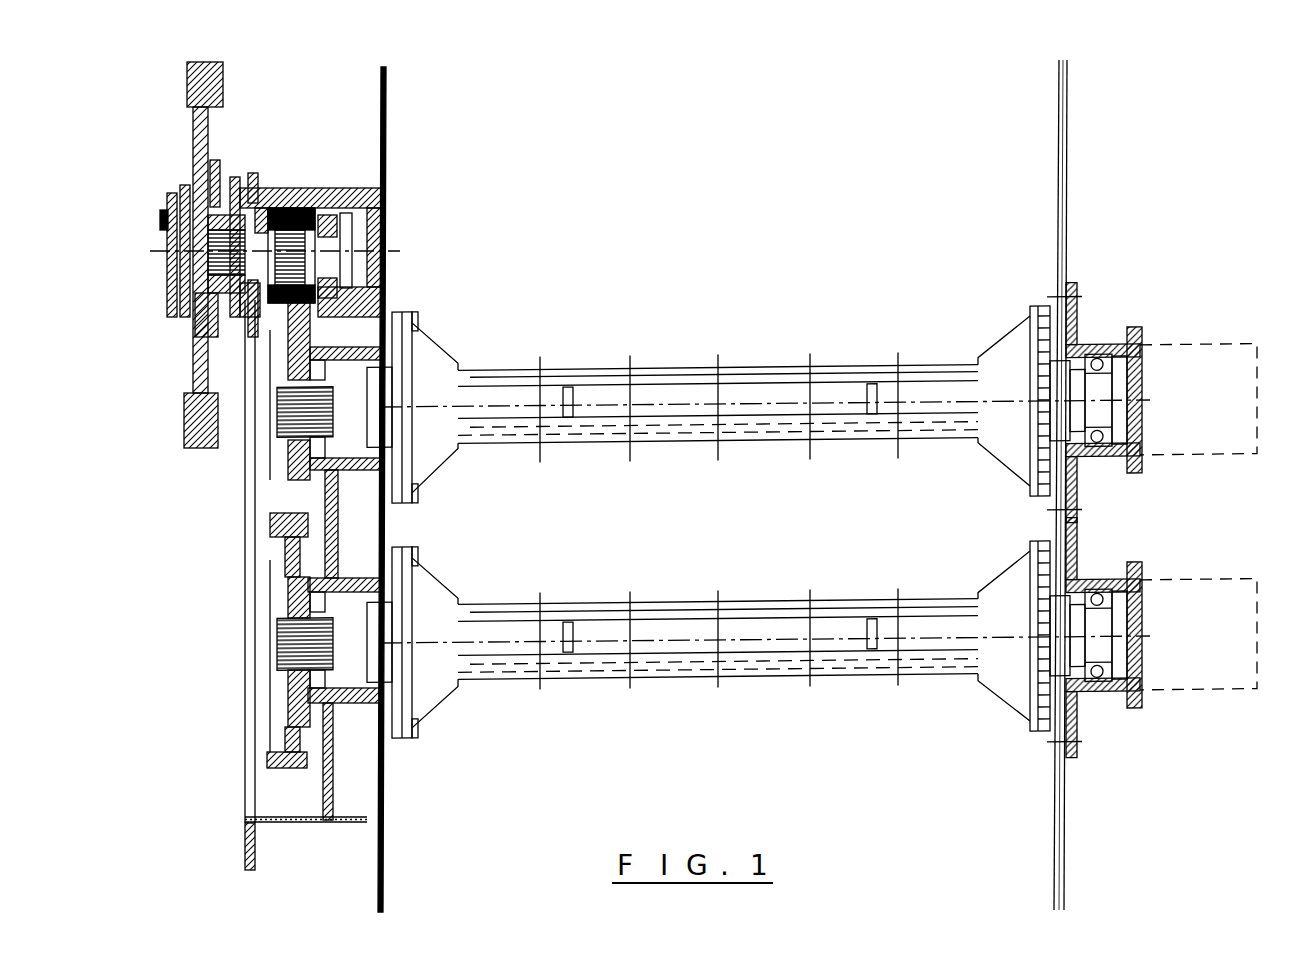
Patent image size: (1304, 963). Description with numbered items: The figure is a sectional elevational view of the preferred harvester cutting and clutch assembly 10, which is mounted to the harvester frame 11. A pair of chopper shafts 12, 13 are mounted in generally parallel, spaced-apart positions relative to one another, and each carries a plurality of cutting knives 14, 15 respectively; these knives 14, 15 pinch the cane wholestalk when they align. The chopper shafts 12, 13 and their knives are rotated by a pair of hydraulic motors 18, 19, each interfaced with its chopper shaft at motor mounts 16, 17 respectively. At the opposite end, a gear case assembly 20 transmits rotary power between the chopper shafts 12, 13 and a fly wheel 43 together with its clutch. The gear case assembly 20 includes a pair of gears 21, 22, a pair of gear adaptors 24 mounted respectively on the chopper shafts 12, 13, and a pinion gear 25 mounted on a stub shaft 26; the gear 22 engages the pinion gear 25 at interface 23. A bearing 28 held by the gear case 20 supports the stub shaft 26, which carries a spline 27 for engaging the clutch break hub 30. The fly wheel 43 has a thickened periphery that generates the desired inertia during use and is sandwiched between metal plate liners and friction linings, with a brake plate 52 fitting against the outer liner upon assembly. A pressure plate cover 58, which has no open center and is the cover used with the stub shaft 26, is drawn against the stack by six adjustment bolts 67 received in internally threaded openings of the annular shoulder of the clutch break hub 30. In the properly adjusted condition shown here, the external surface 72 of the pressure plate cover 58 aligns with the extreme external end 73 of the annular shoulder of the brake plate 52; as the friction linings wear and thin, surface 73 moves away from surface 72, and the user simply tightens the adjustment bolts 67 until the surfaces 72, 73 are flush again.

The harvester cutting and clutch assembly 10 is at (672, 168).
The harvester frame 11 is at (386, 126).
The chopper shaft 12 is at (737, 395).
The chopper shaft 13 is at (765, 630).
The cutting knives 14 is at (582, 369).
The cutting knives 15 is at (670, 603).
The motor mount 16 is at (1087, 347).
The motor mount 17 is at (1098, 700).
The hydraulic motor 18 is at (1183, 352).
The hydraulic motor 19 is at (1195, 588).
The gear case assembly 20 is at (247, 560).
The gear 21 is at (270, 756).
The gear 22 is at (286, 498).
The interface 23 is at (285, 318).
The gear adaptor 24 is at (288, 456).
The pinion gear 25 is at (313, 190).
The stub shaft 26 is at (282, 208).
The spline 27 is at (197, 300).
The bearing 28 is at (376, 206).
The clutch break hub 30 is at (226, 200).
The fly wheel 43 is at (190, 82).
The brake plate 52 is at (250, 300).
The pressure plate cover 58 is at (206, 258).
The adjustment bolt 67 is at (160, 222).
The external surface 72 is at (170, 202).
The extreme external end 73 is at (183, 195).